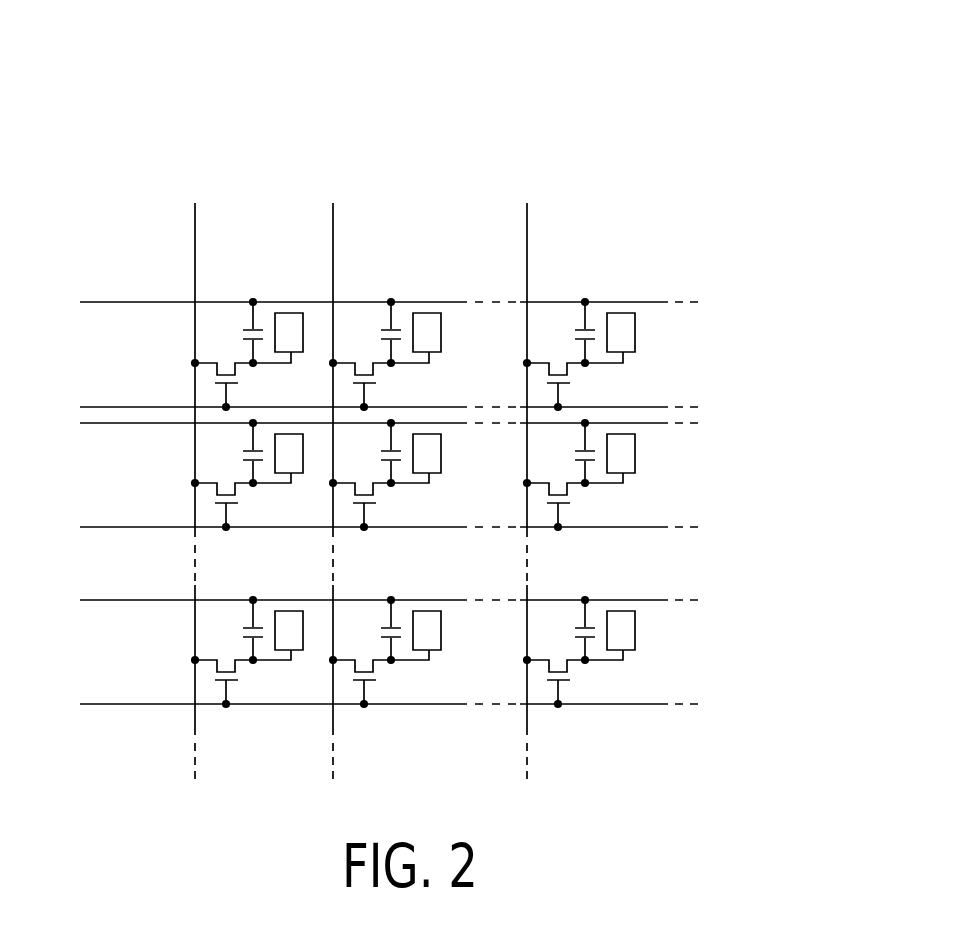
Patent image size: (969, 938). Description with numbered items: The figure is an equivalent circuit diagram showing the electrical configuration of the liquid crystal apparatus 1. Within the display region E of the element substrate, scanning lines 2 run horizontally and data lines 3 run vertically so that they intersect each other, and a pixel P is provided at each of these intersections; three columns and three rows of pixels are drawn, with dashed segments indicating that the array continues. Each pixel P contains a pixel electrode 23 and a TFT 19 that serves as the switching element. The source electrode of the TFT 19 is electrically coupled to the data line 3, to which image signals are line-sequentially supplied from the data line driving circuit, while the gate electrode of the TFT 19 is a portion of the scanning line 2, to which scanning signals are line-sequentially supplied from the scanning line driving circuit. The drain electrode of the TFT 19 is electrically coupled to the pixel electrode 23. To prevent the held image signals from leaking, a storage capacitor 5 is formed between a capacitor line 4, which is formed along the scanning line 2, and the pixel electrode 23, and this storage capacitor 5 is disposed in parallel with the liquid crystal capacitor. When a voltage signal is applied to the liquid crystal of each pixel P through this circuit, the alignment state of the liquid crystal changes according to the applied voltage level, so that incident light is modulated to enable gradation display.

The liquid crystal apparatus 1 is at (746, 75).
The display region E is at (663, 172).
The scanning line 2 is at (665, 407).
The data line 3 is at (196, 262).
The capacitor line 4 is at (665, 302).
The pixel P is at (200, 306).
The storage capacitor 5 is at (228, 335).
The TFT 19 is at (249, 382).
The pixel electrode 23 is at (293, 313).